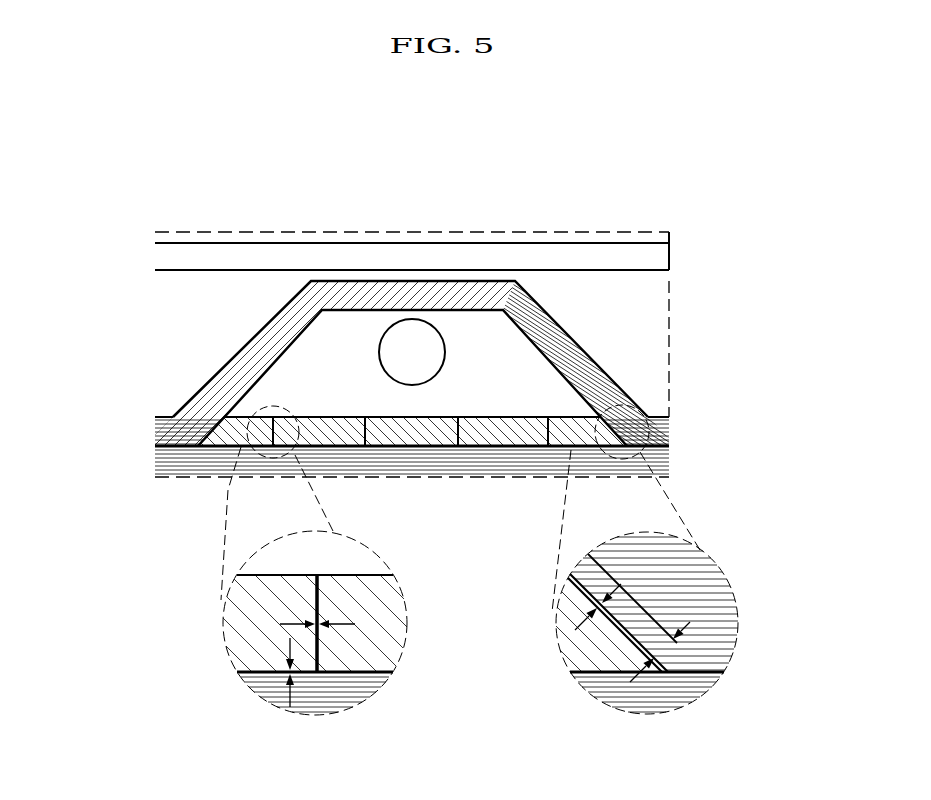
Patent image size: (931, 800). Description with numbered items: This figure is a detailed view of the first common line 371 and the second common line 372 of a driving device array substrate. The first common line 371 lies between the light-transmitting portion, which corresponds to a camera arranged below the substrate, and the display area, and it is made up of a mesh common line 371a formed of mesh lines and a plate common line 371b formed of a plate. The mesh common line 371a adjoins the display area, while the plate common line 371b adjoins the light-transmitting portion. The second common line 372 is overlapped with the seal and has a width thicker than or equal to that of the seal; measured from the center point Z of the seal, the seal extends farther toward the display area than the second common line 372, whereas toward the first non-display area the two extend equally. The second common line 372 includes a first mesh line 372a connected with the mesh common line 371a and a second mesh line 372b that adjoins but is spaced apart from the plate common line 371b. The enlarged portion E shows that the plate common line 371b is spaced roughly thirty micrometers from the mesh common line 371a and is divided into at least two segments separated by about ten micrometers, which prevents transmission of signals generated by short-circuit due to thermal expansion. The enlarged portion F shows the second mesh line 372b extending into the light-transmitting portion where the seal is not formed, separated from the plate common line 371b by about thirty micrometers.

The first common line 371 is at (447, 498).
The mesh common line 371a is at (628, 481).
The plate common line 371b is at (495, 432).
The second common line 372 is at (442, 564).
The first mesh line 372a is at (441, 579).
The second mesh line 372b is at (149, 418).
The center point of the seal Z is at (669, 432).
The enlarged portion E is at (290, 412).
The enlarged portion F is at (635, 407).